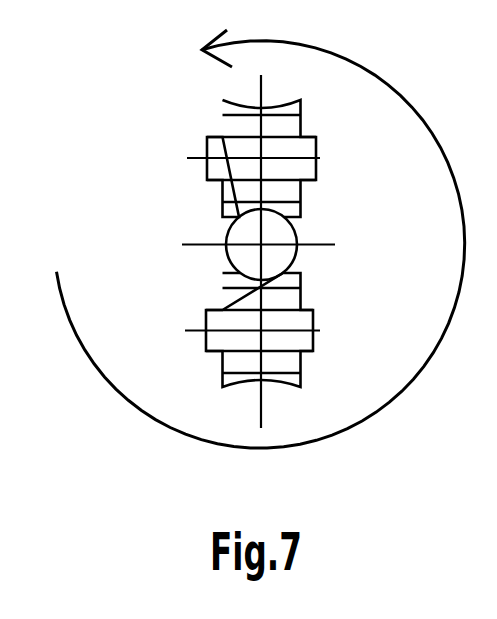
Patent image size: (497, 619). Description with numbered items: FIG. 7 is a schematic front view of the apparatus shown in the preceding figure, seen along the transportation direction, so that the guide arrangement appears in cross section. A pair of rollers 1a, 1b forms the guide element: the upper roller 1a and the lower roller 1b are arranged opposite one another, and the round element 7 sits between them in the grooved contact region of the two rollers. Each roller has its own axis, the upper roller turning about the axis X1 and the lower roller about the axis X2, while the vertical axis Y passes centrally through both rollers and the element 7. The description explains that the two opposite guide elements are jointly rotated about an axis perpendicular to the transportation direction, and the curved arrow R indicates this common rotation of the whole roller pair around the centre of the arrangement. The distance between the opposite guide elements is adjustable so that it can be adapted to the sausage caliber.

The roller 1a is at (300, 108).
The roller 1b is at (298, 381).
The ball / spherical workpiece 7 is at (262, 244).
The axis of upper roller X1 is at (272, 156).
The axis of lower roller X2 is at (271, 330).
The vertical axis Y is at (262, 233).
The rotation direction R is at (261, 239).